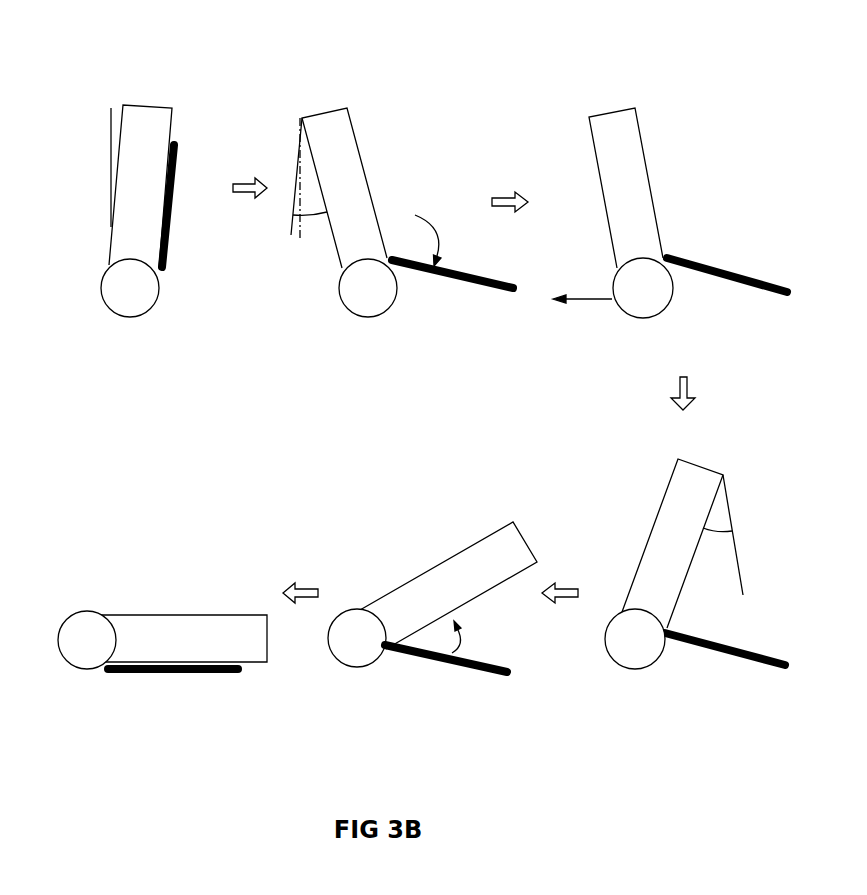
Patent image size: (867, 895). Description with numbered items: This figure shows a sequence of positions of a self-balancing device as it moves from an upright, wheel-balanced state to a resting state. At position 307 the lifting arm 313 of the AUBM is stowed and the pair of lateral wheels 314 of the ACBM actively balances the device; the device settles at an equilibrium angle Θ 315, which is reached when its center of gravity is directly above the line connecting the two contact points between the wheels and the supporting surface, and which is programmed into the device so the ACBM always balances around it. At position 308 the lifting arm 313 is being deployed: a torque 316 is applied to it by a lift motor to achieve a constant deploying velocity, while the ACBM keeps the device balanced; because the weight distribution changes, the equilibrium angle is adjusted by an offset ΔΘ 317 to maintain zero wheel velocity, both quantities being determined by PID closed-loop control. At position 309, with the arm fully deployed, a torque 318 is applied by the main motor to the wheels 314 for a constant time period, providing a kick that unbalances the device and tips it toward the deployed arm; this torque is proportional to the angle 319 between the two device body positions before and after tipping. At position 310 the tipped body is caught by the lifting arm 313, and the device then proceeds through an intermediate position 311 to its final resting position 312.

The position 307 is at (123, 175).
The position 308 is at (378, 173).
The position 309 is at (670, 172).
The position 310 is at (698, 600).
The intermediate position 311 is at (432, 633).
The final resting position 312 is at (162, 677).
The lifting arm 313 is at (162, 191).
The pair of lateral wheels 314 is at (102, 291).
The equilibrium angle Θ 315 is at (111, 196).
The torque 316 is at (447, 243).
The offset ΔΘ 317 is at (292, 213).
The torque 318 is at (594, 299).
The angle 319 is at (734, 531).